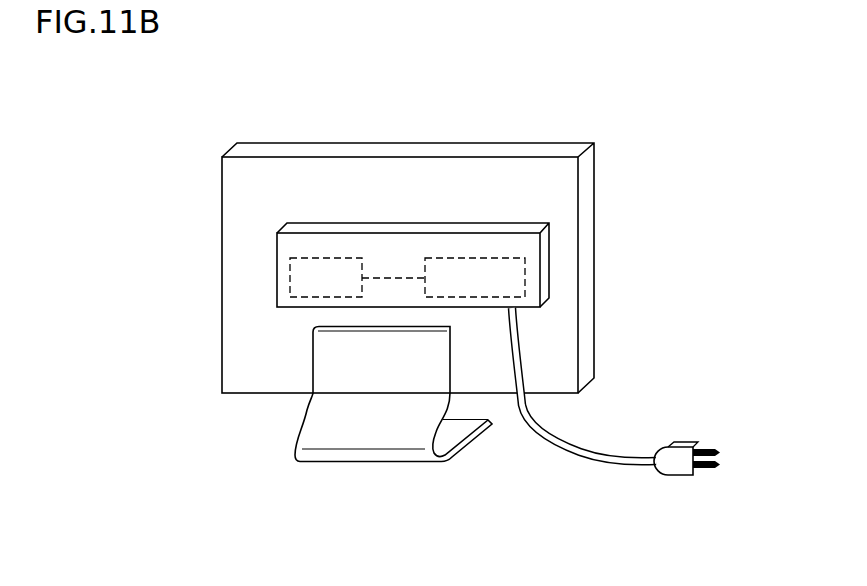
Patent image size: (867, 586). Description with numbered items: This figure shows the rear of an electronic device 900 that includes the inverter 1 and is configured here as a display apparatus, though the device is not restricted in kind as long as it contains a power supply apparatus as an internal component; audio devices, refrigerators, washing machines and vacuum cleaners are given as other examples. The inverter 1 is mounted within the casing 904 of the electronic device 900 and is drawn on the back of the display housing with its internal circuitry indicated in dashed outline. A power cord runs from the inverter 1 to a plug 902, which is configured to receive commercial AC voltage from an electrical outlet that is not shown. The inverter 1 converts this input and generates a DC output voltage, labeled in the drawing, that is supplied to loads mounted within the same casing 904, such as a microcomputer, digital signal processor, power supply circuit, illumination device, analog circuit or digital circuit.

The casing 904 is at (467, 177).
The electronic device 900 is at (624, 161).
The inverter 1 is at (510, 282).
The plug 902 is at (672, 470).